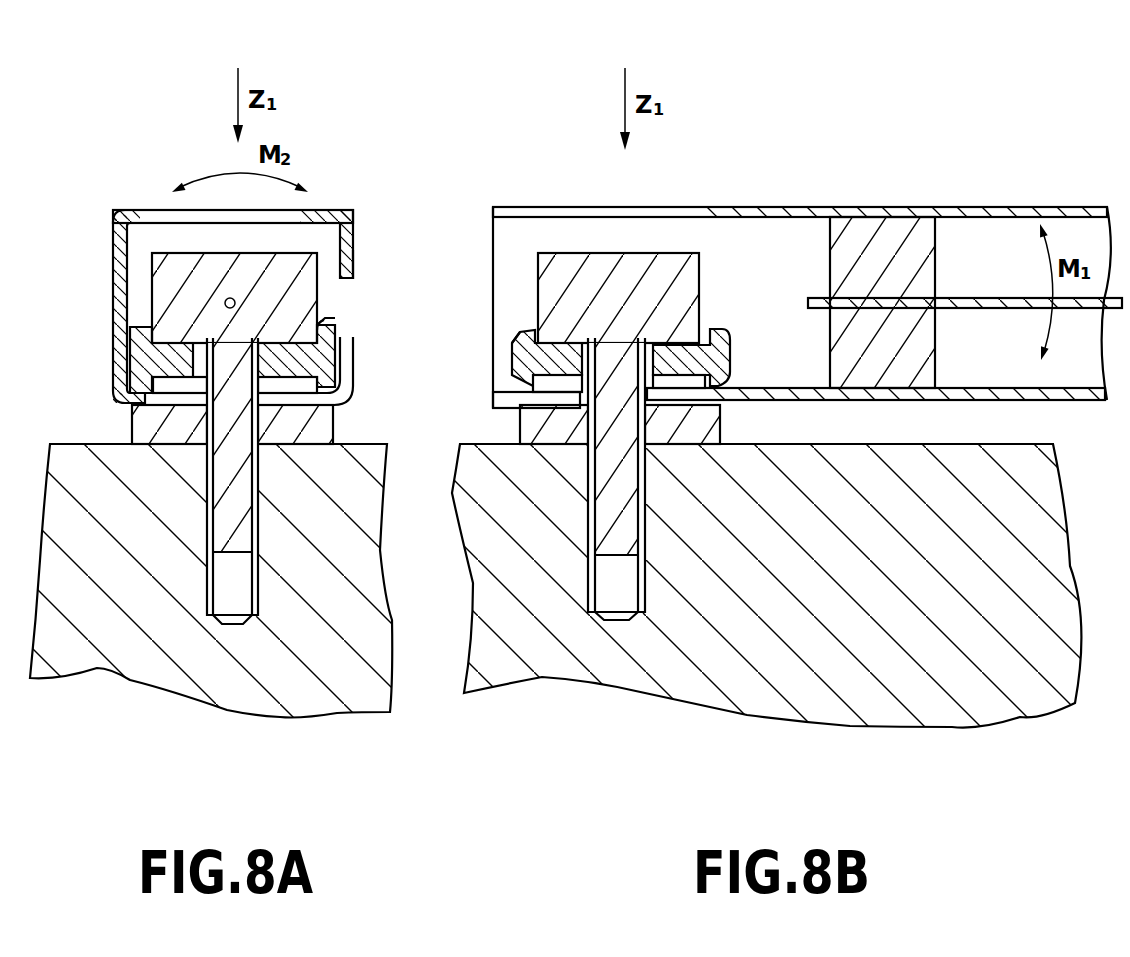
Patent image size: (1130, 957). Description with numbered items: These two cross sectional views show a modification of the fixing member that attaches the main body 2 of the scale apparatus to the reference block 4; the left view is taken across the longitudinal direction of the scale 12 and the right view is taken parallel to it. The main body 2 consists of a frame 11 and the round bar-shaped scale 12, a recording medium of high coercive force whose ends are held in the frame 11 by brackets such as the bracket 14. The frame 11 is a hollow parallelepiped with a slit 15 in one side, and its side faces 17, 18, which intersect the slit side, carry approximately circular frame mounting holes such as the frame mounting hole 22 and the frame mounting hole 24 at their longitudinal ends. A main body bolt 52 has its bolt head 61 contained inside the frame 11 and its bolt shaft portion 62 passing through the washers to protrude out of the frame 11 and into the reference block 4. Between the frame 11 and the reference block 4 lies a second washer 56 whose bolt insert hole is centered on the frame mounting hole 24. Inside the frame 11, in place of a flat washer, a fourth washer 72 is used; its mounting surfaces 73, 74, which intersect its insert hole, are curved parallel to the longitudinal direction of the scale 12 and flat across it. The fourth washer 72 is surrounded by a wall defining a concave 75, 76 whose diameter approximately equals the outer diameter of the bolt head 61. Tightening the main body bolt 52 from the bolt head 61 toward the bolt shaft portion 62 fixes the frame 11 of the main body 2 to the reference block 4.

In FIG. 8A, the main body 2 is at (184, 150).
In FIG. 8B, the main body 2 is at (851, 180).
In FIG. 8A, the reference block 4 is at (286, 683).
In FIG. 8B, the reference block 4 is at (862, 683).
In FIG. 8A, the frame 11 is at (118, 216).
In FIG. 8B, the frame 11 is at (895, 206).
In FIG. 8A, the scale 12 is at (225, 302).
In FIG. 8B, the scale 12 is at (993, 293).
In FIG. 8B, the bracket 14 is at (940, 236).
In FIG. 8A, the slit 15 is at (357, 287).
In FIG. 8B, the side face 17 is at (1006, 198).
In FIG. 8B, the side face 18 is at (1068, 400).
In FIG. 8A, the frame mounting hole 22 is at (315, 210).
In FIG. 8B, the frame mounting hole 22 is at (517, 206).
In FIG. 8A, the frame mounting hole 24 is at (313, 400).
In FIG. 8B, the frame mounting hole 24 is at (585, 442).
In FIG. 8A, the main body bolt 52 is at (262, 242).
In FIG. 8B, the main body bolt 52 is at (677, 242).
In FIG. 8A, the second washer 56 is at (135, 420).
In FIG. 8B, the second washer 56 is at (767, 383).
In FIG. 8A, the bolt head 61 is at (182, 255).
In FIG. 8B, the bolt head 61 is at (632, 272).
In FIG. 8A, the bolt shaft portion 62 is at (243, 506).
In FIG. 8B, the bolt shaft portion 62 is at (605, 514).
In FIG. 8A, the fourth washer 72 is at (135, 355).
In FIG. 8B, the fourth washer 72 is at (518, 358).
In FIG. 8A, the mounting surface 73 is at (330, 325).
In FIG. 8B, the mounting surface 73 is at (552, 332).
In FIG. 8A, the mounting surface 74 is at (345, 397).
In FIG. 8B, the mounting surface 74 is at (565, 379).
In FIG. 8A, the concave 75 is at (322, 320).
In FIG. 8B, the concave 75 is at (538, 345).
In FIG. 8A, the concave 76 is at (345, 403).
In FIG. 8B, the concave 76 is at (533, 401).